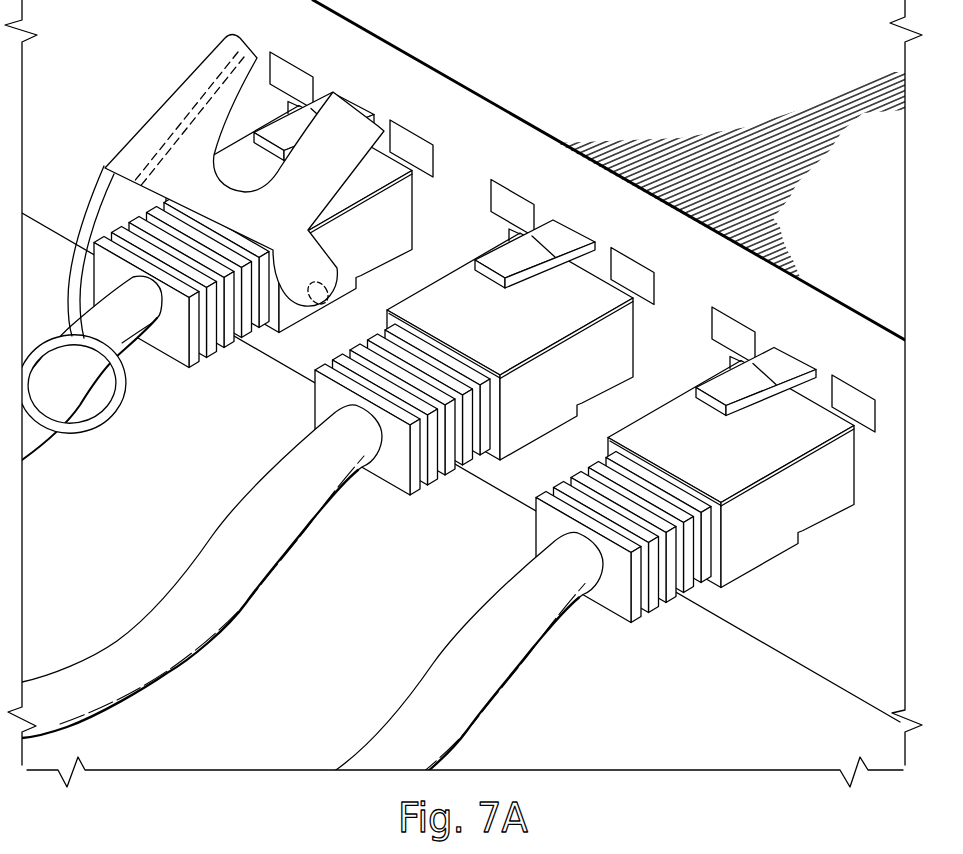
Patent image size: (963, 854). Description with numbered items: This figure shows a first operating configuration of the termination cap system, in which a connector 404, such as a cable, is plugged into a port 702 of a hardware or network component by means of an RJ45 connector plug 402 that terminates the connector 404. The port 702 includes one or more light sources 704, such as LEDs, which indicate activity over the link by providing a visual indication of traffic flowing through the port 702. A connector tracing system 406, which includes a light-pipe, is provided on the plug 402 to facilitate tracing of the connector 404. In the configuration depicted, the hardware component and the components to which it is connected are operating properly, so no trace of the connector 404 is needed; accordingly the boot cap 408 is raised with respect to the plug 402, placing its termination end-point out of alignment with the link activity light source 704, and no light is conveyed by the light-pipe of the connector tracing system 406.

The connector plug 402 is at (173, 357).
The signaling connector 404 is at (45, 444).
The connector tracing system 406 is at (95, 232).
The boot cap 408 is at (168, 107).
The port 702 is at (318, 99).
The light source 704 is at (282, 70).